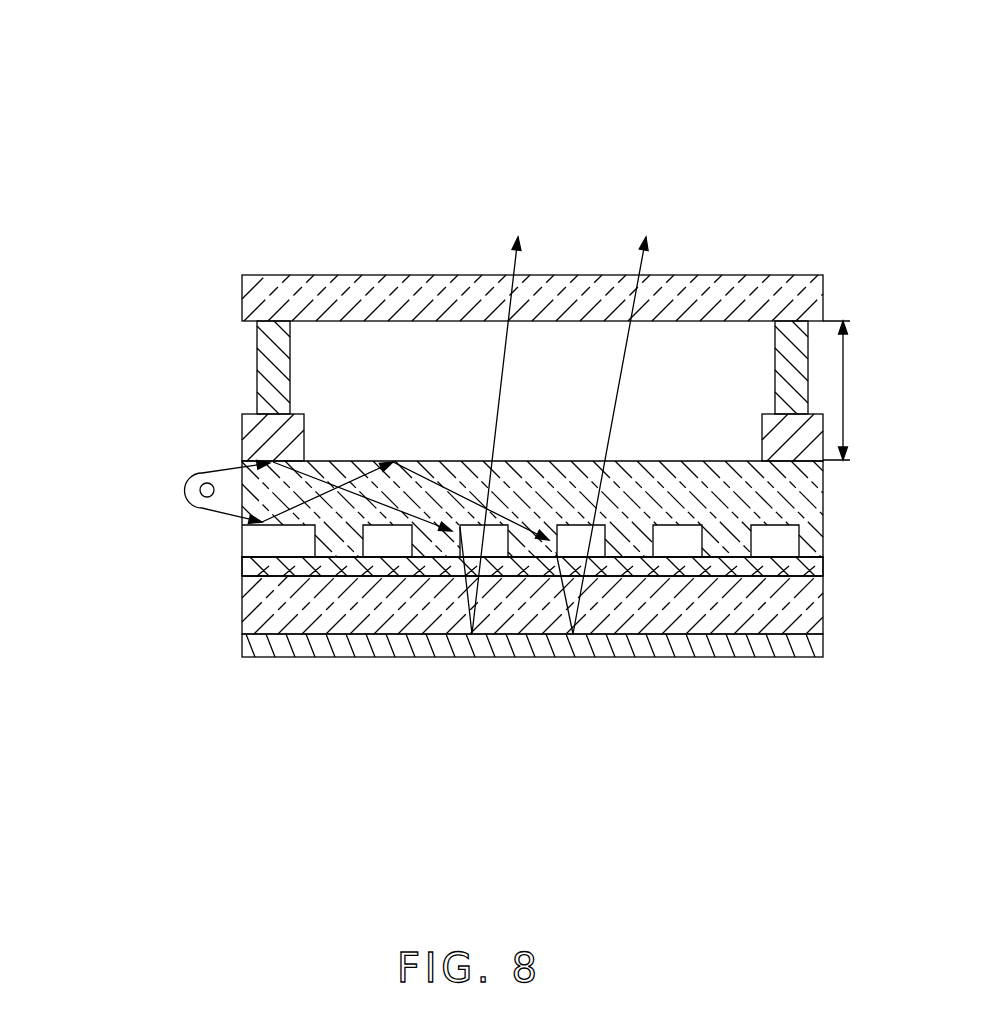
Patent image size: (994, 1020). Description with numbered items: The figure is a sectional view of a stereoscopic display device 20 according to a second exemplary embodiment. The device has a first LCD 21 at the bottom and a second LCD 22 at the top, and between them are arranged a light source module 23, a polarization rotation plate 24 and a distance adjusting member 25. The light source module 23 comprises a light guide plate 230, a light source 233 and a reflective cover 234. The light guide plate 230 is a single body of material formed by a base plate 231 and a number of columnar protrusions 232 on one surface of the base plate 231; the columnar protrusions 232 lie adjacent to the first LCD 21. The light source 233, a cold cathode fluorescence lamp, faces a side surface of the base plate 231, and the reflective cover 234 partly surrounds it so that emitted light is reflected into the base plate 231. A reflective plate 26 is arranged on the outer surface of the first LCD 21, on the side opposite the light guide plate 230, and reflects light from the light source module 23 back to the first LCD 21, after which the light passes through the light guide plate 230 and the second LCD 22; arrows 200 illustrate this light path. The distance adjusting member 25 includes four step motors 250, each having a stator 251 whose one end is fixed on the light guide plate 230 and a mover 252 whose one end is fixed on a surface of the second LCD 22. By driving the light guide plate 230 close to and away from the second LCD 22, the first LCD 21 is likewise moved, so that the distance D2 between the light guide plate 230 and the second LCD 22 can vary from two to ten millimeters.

The stereoscopic display device 20 is at (475, 372).
The arrows 200 is at (637, 270).
The second LCD 22 is at (797, 295).
The distance adjusting member 25 is at (455, 361).
The step motor 250 is at (455, 391).
The stator 251 is at (263, 428).
The mover 252 is at (273, 357).
The light source module 23 is at (445, 527).
The light guide plate 230 is at (469, 544).
The base plate 231 is at (265, 503).
The columnar protrusions 232 is at (337, 543).
The light source 233 is at (200, 493).
The reflective cover 234 is at (333, 483).
The polarization rotation plate 24 is at (815, 567).
The first LCD 21 is at (798, 605).
The reflective plate 26 is at (613, 645).
The distance D2 is at (853, 390).